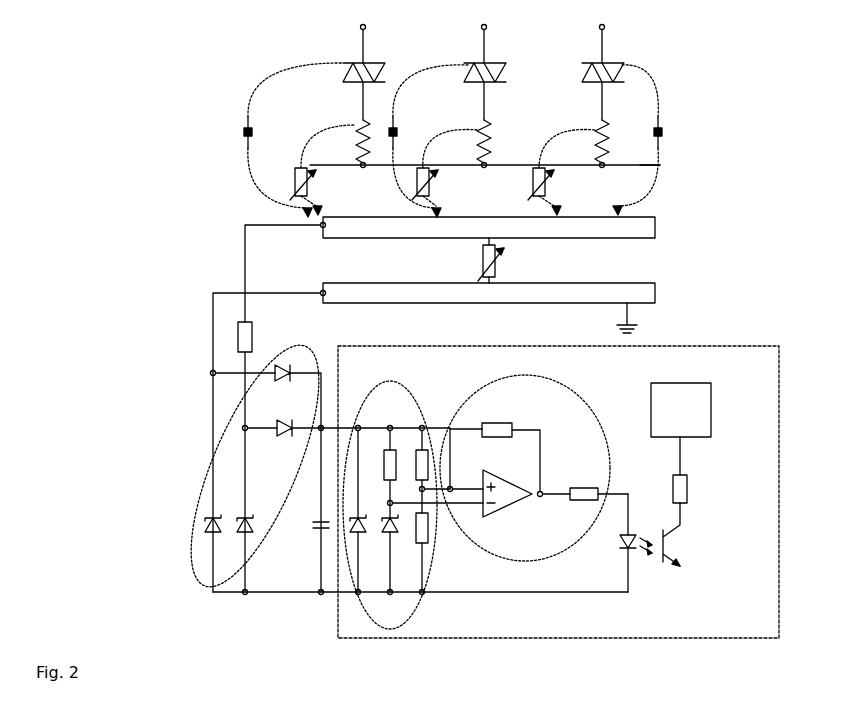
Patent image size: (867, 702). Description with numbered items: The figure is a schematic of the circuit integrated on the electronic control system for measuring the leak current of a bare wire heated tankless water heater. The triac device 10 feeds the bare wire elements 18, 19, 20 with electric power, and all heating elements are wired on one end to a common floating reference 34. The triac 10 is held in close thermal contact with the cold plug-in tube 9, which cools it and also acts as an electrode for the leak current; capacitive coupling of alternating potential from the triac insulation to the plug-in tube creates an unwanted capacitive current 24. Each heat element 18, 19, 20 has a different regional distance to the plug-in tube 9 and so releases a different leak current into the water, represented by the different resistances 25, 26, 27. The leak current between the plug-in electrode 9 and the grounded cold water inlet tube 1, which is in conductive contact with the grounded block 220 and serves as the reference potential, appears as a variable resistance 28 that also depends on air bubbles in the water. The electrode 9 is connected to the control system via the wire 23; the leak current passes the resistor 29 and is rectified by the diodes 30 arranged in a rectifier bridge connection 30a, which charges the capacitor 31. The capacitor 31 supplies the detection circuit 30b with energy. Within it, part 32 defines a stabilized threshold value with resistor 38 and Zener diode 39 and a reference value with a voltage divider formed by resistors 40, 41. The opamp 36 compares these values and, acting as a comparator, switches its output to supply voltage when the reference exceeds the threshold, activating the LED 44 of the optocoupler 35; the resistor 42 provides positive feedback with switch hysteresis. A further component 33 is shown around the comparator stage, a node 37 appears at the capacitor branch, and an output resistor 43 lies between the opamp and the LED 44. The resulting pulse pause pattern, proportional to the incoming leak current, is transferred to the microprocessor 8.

The cold water inlet tube 1 is at (656, 292).
The microprocessor 8 is at (713, 415).
The plug-in tube 9 is at (656, 222).
The triac device 10 is at (345, 60).
The bare wire element 18 is at (358, 124).
The bare wire element 19 is at (479, 124).
The bare wire element 20 is at (597, 124).
The wire 23 is at (320, 226).
The capacitive current 24 is at (246, 128).
The resistance 25 is at (312, 182).
The resistance 26 is at (432, 184).
The resistance 27 is at (550, 184).
The variable resistance 28 is at (503, 254).
The resistor 29 is at (254, 330).
The diodes 30 is at (300, 374).
The rectifier bridge connection 30a is at (205, 468).
The detection circuit 30b is at (781, 492).
The capacitor 31 is at (318, 524).
The part 32 is at (432, 567).
The amplifier circuit 33 is at (562, 375).
The common floating reference 34 is at (660, 165).
The optocoupler 35 is at (680, 545).
The opamp 36 is at (505, 508).
The node 37 is at (333, 530).
The resistor 38 is at (392, 448).
The Zener diode 39 is at (352, 545).
The resistor 40 is at (425, 448).
The resistor 41 is at (385, 545).
The resistor 42 is at (500, 423).
The output resistor 43 is at (586, 488).
The LED 44 is at (626, 558).
The grounded block 220 is at (638, 325).